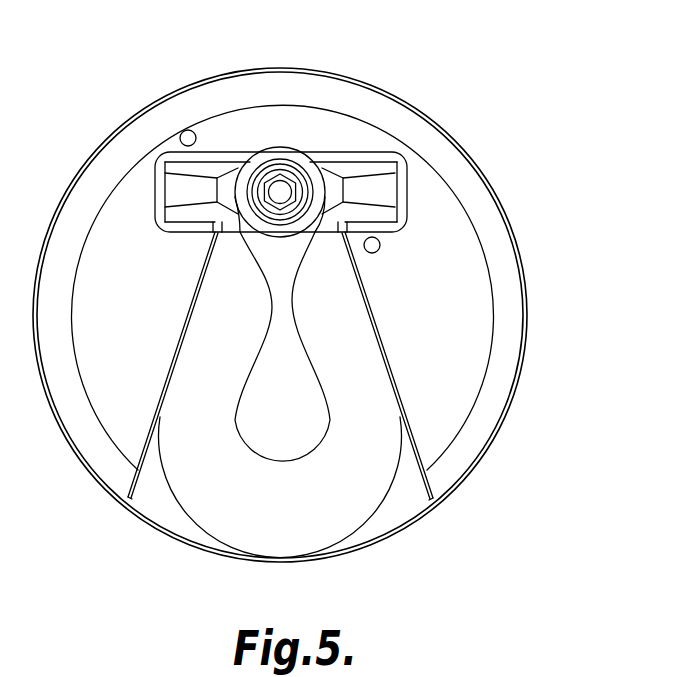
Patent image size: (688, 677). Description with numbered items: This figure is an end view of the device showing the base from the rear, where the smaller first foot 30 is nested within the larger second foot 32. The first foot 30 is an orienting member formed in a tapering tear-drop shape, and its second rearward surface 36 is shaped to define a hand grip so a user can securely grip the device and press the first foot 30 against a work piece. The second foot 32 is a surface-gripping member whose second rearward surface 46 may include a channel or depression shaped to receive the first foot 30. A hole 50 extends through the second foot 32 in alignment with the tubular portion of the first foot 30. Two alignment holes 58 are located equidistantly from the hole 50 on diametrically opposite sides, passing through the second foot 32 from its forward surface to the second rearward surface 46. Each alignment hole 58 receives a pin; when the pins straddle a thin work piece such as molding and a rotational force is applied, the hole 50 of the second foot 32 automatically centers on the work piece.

The first foot 30 is at (367, 527).
The second foot 32 is at (513, 222).
The second rearward surface 36 is at (257, 520).
The second rearward surface 46 is at (453, 385).
The hole 50 is at (400, 160).
The alignment holes 58 is at (188, 130).